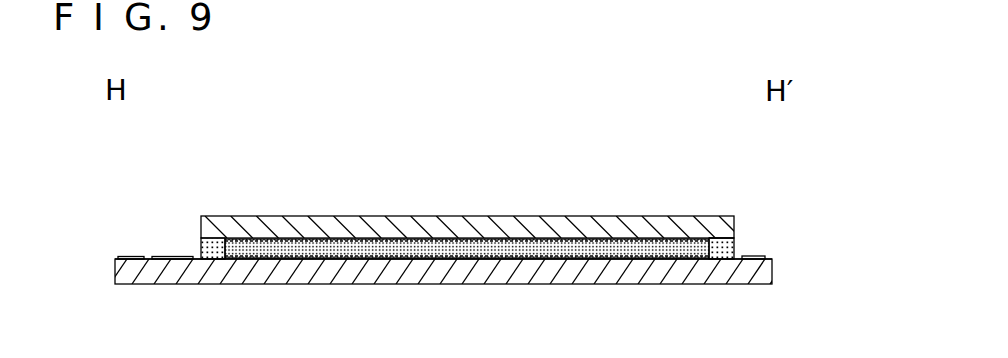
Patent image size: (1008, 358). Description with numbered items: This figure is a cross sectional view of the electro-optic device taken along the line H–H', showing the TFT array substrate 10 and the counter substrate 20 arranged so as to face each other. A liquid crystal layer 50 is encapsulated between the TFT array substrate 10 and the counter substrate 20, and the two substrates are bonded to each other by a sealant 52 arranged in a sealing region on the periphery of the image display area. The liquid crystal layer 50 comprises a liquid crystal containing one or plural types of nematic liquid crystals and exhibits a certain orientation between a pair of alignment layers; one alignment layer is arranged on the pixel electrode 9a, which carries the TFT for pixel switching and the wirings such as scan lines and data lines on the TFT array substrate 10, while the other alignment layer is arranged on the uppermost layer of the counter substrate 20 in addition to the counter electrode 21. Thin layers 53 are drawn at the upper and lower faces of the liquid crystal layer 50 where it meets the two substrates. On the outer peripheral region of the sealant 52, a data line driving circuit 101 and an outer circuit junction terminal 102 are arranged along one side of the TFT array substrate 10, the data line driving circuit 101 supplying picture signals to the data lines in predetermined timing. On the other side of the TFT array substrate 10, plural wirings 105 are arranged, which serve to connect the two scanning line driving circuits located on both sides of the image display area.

The pixel electrode 9a is at (302, 262).
The TFT array substrate 10 is at (571, 272).
The counter substrate 20 is at (433, 216).
The counter electrode 21 is at (710, 237).
The liquid crystal layer 50 is at (431, 250).
The sealant 52 is at (202, 248).
The adhesive layer 53 is at (235, 238).
The data line driving circuit 101 is at (173, 257).
The outer circuit junction terminal 102 is at (122, 256).
The wirings 105 is at (765, 257).